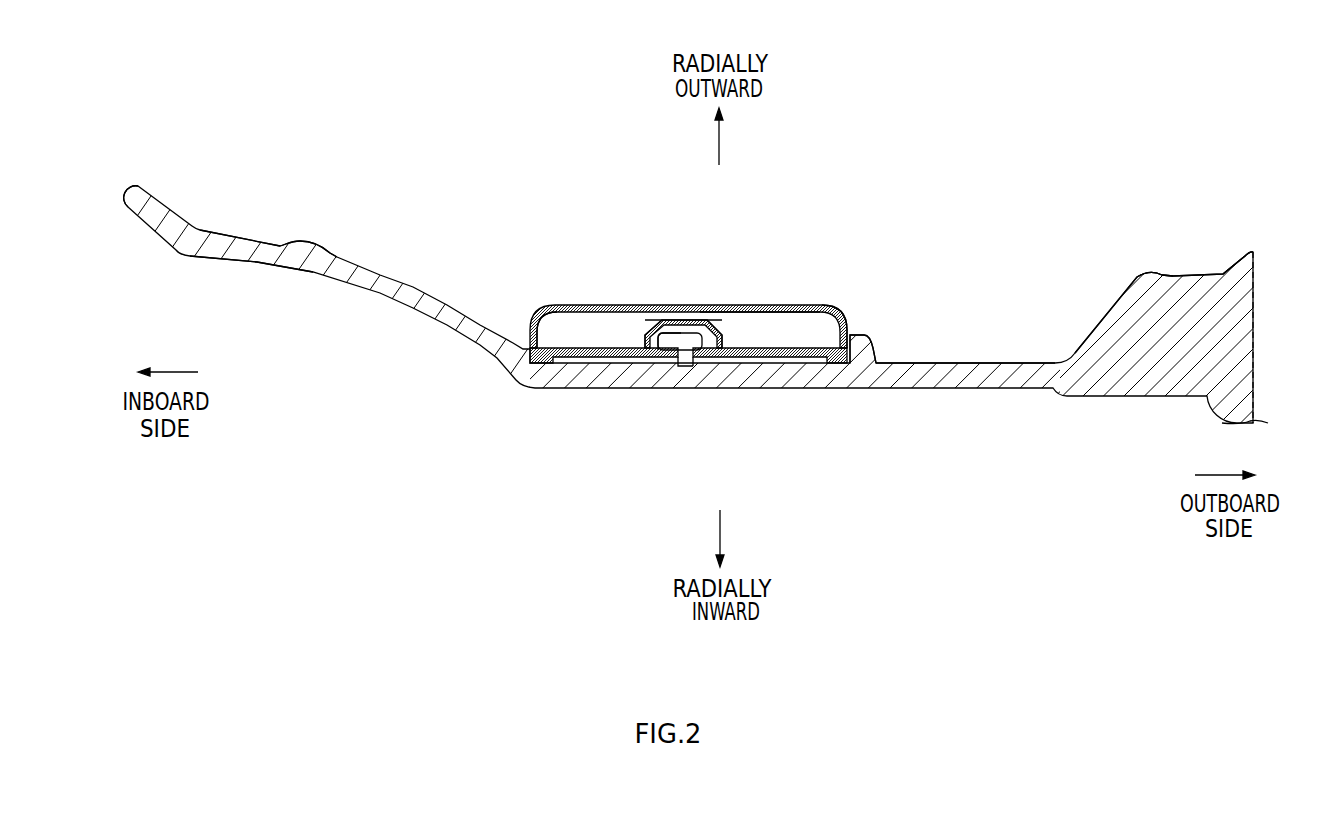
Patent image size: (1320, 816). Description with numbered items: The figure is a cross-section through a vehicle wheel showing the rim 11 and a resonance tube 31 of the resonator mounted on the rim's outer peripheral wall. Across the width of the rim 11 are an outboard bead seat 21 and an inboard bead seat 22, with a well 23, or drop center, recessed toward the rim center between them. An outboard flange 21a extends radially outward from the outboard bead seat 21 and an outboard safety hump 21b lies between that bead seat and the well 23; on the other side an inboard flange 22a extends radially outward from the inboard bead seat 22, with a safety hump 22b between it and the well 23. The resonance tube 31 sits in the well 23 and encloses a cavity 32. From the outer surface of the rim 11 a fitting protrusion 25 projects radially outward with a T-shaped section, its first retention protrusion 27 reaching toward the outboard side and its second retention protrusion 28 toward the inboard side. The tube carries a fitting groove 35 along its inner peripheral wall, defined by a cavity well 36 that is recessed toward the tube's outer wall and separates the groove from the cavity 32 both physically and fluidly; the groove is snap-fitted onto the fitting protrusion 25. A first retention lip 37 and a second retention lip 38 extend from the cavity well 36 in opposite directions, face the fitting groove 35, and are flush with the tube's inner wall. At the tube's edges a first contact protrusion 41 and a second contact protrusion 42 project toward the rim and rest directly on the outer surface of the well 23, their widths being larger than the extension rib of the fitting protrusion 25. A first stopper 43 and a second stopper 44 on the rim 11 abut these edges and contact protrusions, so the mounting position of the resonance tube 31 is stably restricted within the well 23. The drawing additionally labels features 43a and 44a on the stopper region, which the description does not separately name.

The rim 11 is at (608, 397).
The outboard bead seat 21 is at (1197, 275).
The outboard flange 21a is at (1240, 262).
The outboard safety hump 21b is at (1152, 280).
The inboard bead seat 22 is at (242, 232).
The inboard flange 22a is at (154, 202).
The safety hump 22b is at (310, 252).
The well 23 is at (782, 375).
The fitting protrusion 25 is at (723, 305).
The first retention protrusion 27 is at (710, 332).
The second retention protrusion 28 is at (667, 325).
The resonance tube 31 is at (727, 262).
The cavity 32 is at (808, 326).
The fitting groove 35 is at (685, 332).
The cavity well 36 is at (647, 318).
The first retention lip 37 is at (695, 357).
The second retention lip 38 is at (680, 357).
The first contact protrusion 41 is at (838, 362).
The second contact protrusion 42 is at (540, 362).
The first stopper 43 is at (862, 337).
The cover outboard wall 43a is at (842, 327).
The second stopper 44 is at (530, 348).
The cover inboard wall 44a is at (547, 335).